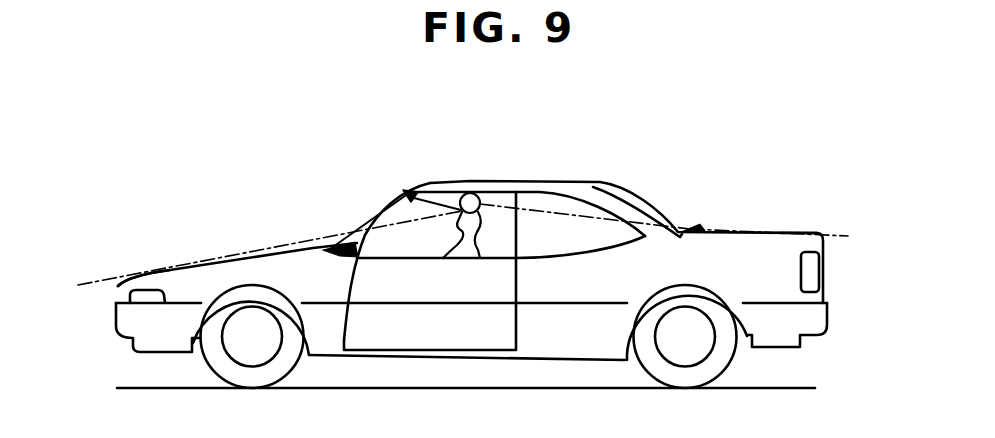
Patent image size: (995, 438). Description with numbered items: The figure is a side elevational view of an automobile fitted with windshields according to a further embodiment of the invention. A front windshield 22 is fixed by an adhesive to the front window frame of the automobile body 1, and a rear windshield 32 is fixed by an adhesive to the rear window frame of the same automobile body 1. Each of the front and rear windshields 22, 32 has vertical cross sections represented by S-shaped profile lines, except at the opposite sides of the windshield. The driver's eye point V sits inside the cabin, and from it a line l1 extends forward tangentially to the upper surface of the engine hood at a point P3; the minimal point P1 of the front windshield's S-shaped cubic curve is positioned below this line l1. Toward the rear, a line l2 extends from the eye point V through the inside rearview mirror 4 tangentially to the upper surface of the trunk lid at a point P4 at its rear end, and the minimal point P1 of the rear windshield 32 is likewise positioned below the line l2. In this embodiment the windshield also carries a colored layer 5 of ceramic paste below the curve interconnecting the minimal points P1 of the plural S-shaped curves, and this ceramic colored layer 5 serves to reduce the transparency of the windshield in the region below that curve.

The automobile body 1 is at (557, 186).
The inside rearview mirror 4 is at (411, 190).
The colored layer 5 is at (327, 243).
The front windshield 22 is at (383, 207).
The rear windshield 32 is at (635, 201).
The eye point V is at (479, 194).
The line l1 is at (228, 260).
The line l2 is at (534, 210).
The minimal point P1 is at (343, 243).
The point P3 is at (156, 274).
The point P4 is at (813, 231).